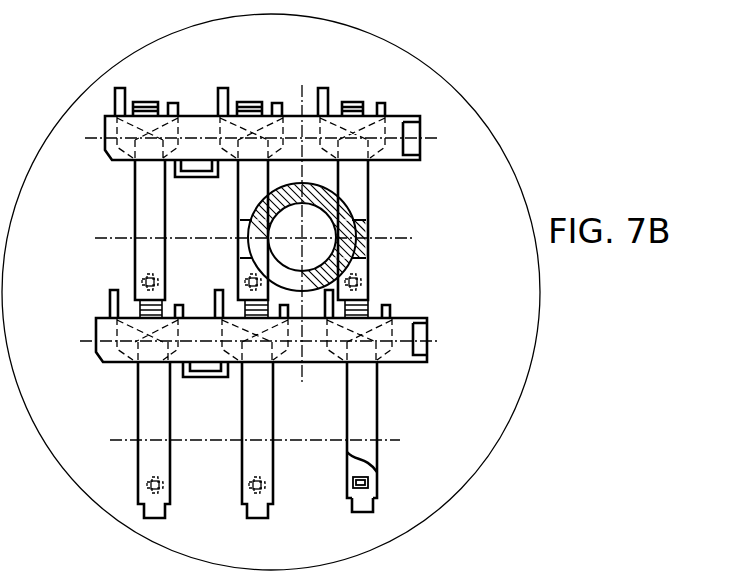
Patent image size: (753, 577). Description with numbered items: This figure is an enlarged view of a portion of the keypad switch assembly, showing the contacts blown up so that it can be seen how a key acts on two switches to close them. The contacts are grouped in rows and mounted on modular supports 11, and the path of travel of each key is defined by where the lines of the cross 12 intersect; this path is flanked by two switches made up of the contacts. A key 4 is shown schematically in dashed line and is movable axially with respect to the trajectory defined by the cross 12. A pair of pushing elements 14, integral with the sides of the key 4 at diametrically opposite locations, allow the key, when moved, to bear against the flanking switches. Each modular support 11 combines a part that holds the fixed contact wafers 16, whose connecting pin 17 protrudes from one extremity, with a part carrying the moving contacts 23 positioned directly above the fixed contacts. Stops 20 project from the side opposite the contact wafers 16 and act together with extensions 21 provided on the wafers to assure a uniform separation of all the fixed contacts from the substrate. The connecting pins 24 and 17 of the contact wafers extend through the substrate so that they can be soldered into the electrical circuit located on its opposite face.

The key 4 is at (318, 193).
The modular support 11 is at (115, 350).
The cross 12 is at (302, 238).
The pushing elements 14 is at (253, 245).
The contact wafers 16 is at (353, 468).
The connecting pin 17 is at (318, 98).
The stops 20 is at (345, 102).
The extensions 21 is at (368, 510).
The moving contacts 23 is at (362, 407).
The connecting pins 24 is at (383, 107).